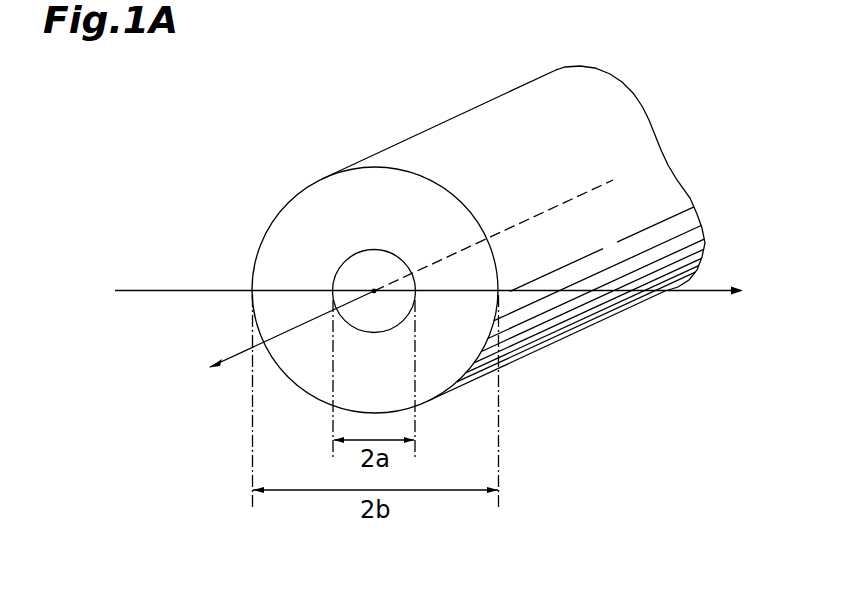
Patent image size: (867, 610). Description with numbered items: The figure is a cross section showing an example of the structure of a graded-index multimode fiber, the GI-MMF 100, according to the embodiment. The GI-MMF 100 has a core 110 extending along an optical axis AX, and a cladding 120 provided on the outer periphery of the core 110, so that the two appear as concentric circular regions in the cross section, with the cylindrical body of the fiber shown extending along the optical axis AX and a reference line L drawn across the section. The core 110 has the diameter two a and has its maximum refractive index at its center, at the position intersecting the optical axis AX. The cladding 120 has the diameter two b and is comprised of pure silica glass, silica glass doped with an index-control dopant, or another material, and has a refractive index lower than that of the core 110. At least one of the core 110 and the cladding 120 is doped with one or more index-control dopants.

The GI-MMF 100 is at (451, 108).
The cladding 120 is at (368, 187).
The core 110 is at (355, 268).
The optical axis AX is at (387, 283).
The reference line L is at (440, 292).